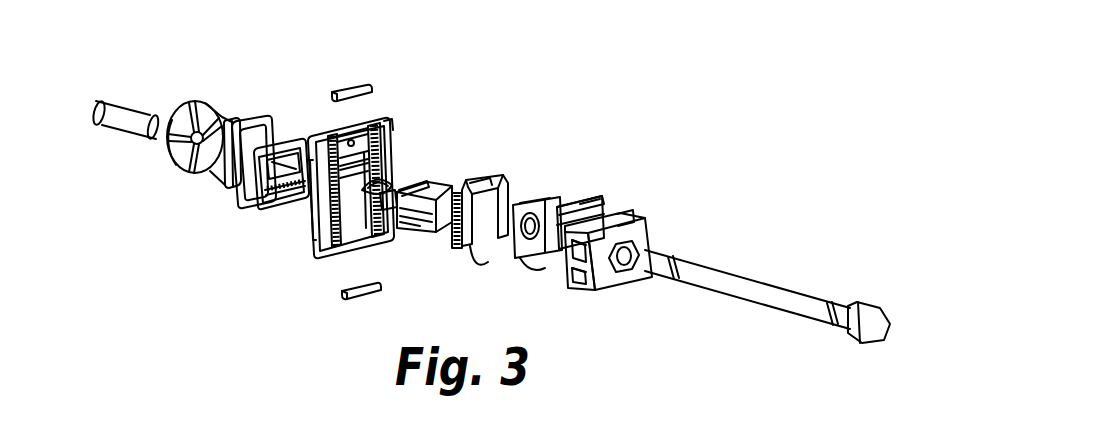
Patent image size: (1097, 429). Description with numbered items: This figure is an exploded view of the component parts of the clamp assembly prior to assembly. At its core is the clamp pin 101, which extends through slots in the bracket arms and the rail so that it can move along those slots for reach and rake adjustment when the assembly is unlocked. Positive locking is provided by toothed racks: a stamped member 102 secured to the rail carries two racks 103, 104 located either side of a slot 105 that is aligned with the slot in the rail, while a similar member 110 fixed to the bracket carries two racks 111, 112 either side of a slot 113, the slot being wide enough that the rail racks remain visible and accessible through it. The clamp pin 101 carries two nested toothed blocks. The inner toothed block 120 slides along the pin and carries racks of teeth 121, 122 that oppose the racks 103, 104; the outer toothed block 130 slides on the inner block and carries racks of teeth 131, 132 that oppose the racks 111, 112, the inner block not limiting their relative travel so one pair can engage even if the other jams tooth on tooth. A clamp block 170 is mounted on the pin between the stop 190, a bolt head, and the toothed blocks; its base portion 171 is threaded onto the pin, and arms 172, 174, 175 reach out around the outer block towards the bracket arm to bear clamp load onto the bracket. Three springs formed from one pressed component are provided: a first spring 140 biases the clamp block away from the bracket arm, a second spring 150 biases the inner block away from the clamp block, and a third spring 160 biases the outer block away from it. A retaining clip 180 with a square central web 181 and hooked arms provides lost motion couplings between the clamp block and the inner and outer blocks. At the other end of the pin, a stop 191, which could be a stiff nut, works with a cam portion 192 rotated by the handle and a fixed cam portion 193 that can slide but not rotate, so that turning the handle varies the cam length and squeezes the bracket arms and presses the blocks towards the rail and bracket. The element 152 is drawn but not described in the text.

The clamp pin 101 is at (732, 288).
The stamped member 102 is at (258, 202).
The rack 103 is at (279, 162).
The rack 104 is at (279, 150).
The slot 105 is at (295, 152).
The member 110 is at (323, 262).
The rack 111 is at (352, 142).
The rack 112 is at (389, 127).
The slot 113 is at (354, 232).
The inner toothed block 120 is at (436, 180).
The rack of teeth 121 is at (399, 188).
The rack of teeth 122 is at (392, 212).
The outer toothed block 130 is at (485, 182).
The rack of teeth 131 is at (449, 243).
The rack of teeth 132 is at (490, 198).
The first spring 140 is at (487, 264).
The second spring 150 is at (525, 248).
The plate edge 152 is at (559, 201).
The third spring 160 is at (533, 255).
The clamp block 170 is at (659, 209).
The base portion 171 is at (648, 243).
The arm 172 is at (638, 218).
The arm 174 is at (563, 262).
The arm 175 is at (565, 255).
The retaining clip 180 is at (596, 202).
The central web 181 is at (586, 204).
The stop 190 is at (870, 305).
The stop 191 is at (124, 108).
The cam portion 192 is at (193, 100).
The fixed cam portion 193 is at (226, 176).